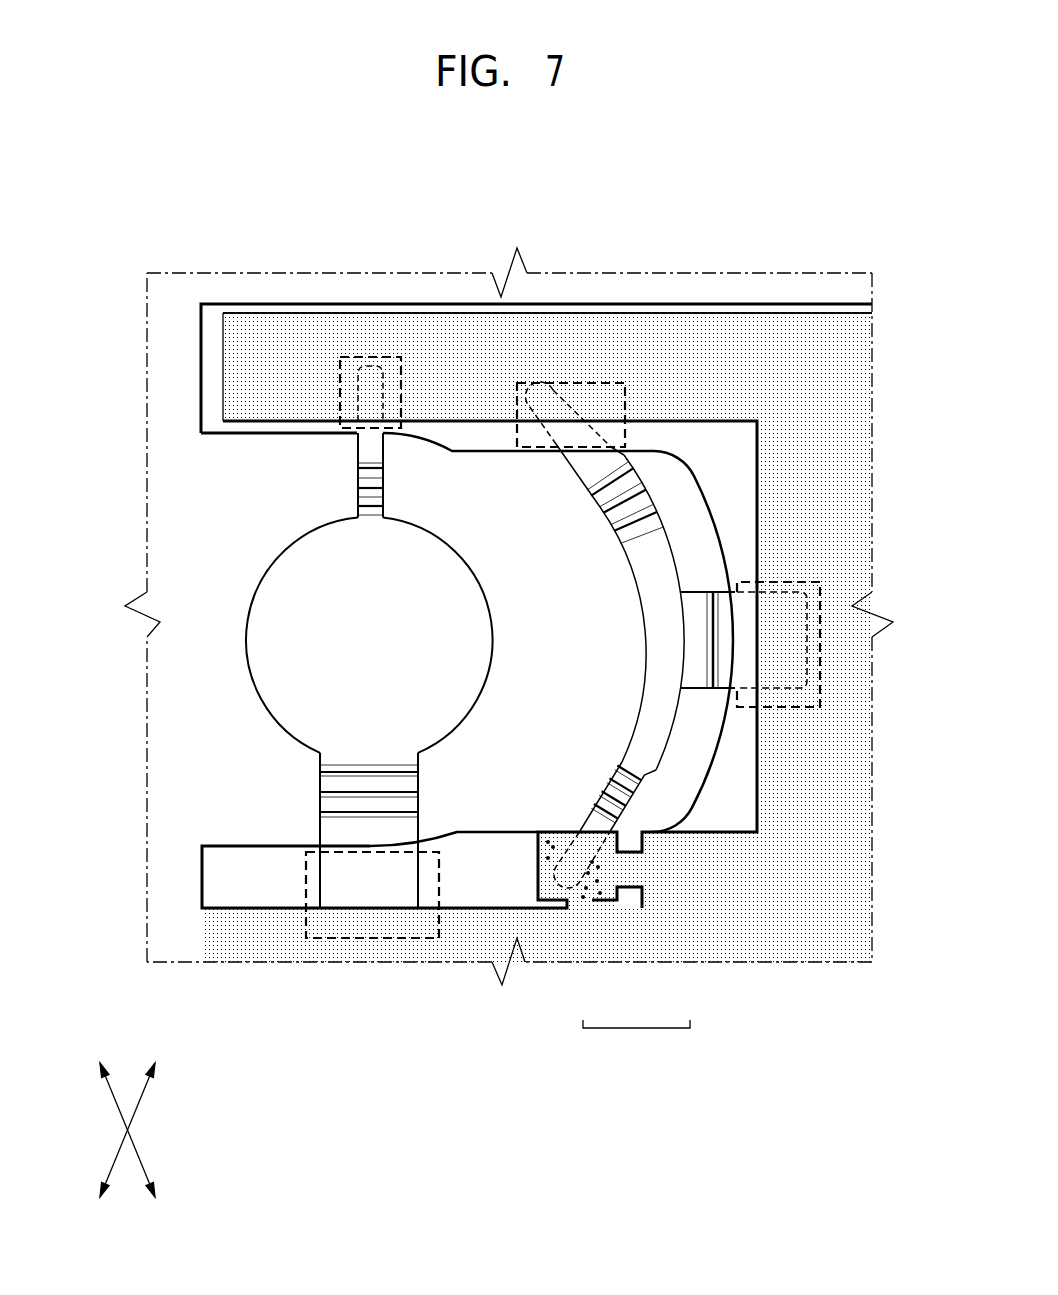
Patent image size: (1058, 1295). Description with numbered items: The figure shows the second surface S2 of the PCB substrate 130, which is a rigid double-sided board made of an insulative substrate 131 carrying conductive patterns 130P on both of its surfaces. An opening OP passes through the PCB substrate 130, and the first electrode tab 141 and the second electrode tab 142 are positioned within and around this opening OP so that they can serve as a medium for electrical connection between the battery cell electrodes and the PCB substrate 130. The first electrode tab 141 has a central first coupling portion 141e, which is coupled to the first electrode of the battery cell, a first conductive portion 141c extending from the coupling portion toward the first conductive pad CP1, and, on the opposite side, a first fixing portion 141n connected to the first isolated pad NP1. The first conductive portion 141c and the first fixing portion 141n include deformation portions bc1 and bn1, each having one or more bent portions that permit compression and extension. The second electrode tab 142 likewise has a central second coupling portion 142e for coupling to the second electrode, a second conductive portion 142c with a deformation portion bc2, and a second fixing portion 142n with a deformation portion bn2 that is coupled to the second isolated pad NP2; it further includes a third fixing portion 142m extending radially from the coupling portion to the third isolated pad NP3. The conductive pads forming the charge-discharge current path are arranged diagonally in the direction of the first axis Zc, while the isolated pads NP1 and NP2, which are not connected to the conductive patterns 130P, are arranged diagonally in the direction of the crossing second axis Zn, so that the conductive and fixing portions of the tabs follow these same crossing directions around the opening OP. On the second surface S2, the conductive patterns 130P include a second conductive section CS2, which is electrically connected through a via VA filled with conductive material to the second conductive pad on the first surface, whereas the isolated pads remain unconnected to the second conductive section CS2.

The PCB substrate 130 is at (198, 336).
The insulative substrate 131 is at (213, 381).
The second surface S2 is at (213, 317).
The first conductive pad CP1 is at (367, 363).
The first conductive portion 141c is at (366, 455).
The deformation portion bc1 is at (383, 487).
The first electrode tab 141 is at (216, 671).
The central first coupling portion 141e is at (280, 693).
The first fixing portion 141n is at (330, 828).
The deformation portion bn1 is at (416, 780).
The first isolated pad NP1 is at (315, 890).
The opening OP is at (201, 527).
The second electrode tab 142 is at (727, 540).
The central second coupling portion 142e is at (658, 635).
The second fixing portion 142n is at (598, 465).
The second isolated pad NP2 is at (578, 397).
The deformation portion bn2 is at (612, 505).
The third fixing portion 142m is at (785, 610).
The third isolated pad NP3 is at (805, 703).
The second conductive portion 142c is at (648, 752).
The deformation portion bc2 is at (603, 788).
The via VA is at (590, 902).
The second conductive section CS2 is at (665, 945).
The conductive patterns 130P is at (636, 1045).
The first axis Zc is at (118, 1114).
The second axis Zn is at (137, 1114).